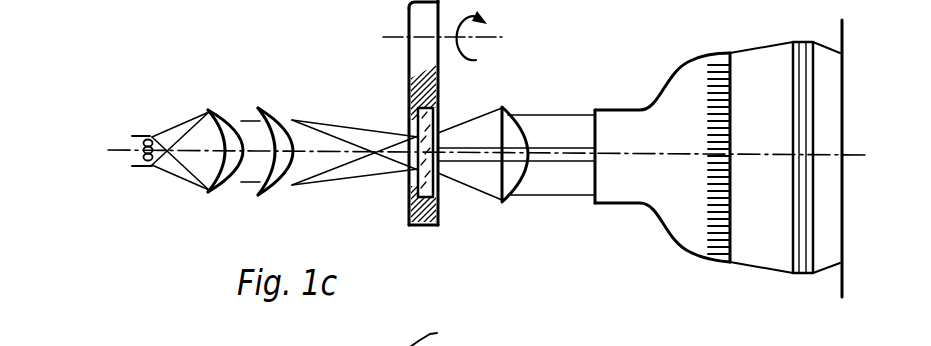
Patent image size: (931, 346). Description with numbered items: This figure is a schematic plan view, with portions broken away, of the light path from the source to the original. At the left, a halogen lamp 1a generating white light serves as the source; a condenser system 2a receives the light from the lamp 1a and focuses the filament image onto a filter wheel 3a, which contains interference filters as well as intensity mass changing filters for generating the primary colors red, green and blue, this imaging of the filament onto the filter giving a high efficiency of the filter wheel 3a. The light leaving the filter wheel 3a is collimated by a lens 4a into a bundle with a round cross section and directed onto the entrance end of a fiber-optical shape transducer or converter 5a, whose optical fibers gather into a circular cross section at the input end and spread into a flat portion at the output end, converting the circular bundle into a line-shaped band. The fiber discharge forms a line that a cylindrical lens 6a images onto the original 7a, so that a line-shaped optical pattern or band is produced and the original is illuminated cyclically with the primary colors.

The halogen lamp 1a is at (146, 136).
The condenser system 2a is at (282, 101).
The filter wheel 3a is at (438, 216).
The lens 4a is at (513, 143).
The shape transducer or converter 5a is at (670, 117).
The cylindrical lens 6a is at (803, 264).
The original 7a is at (836, 36).